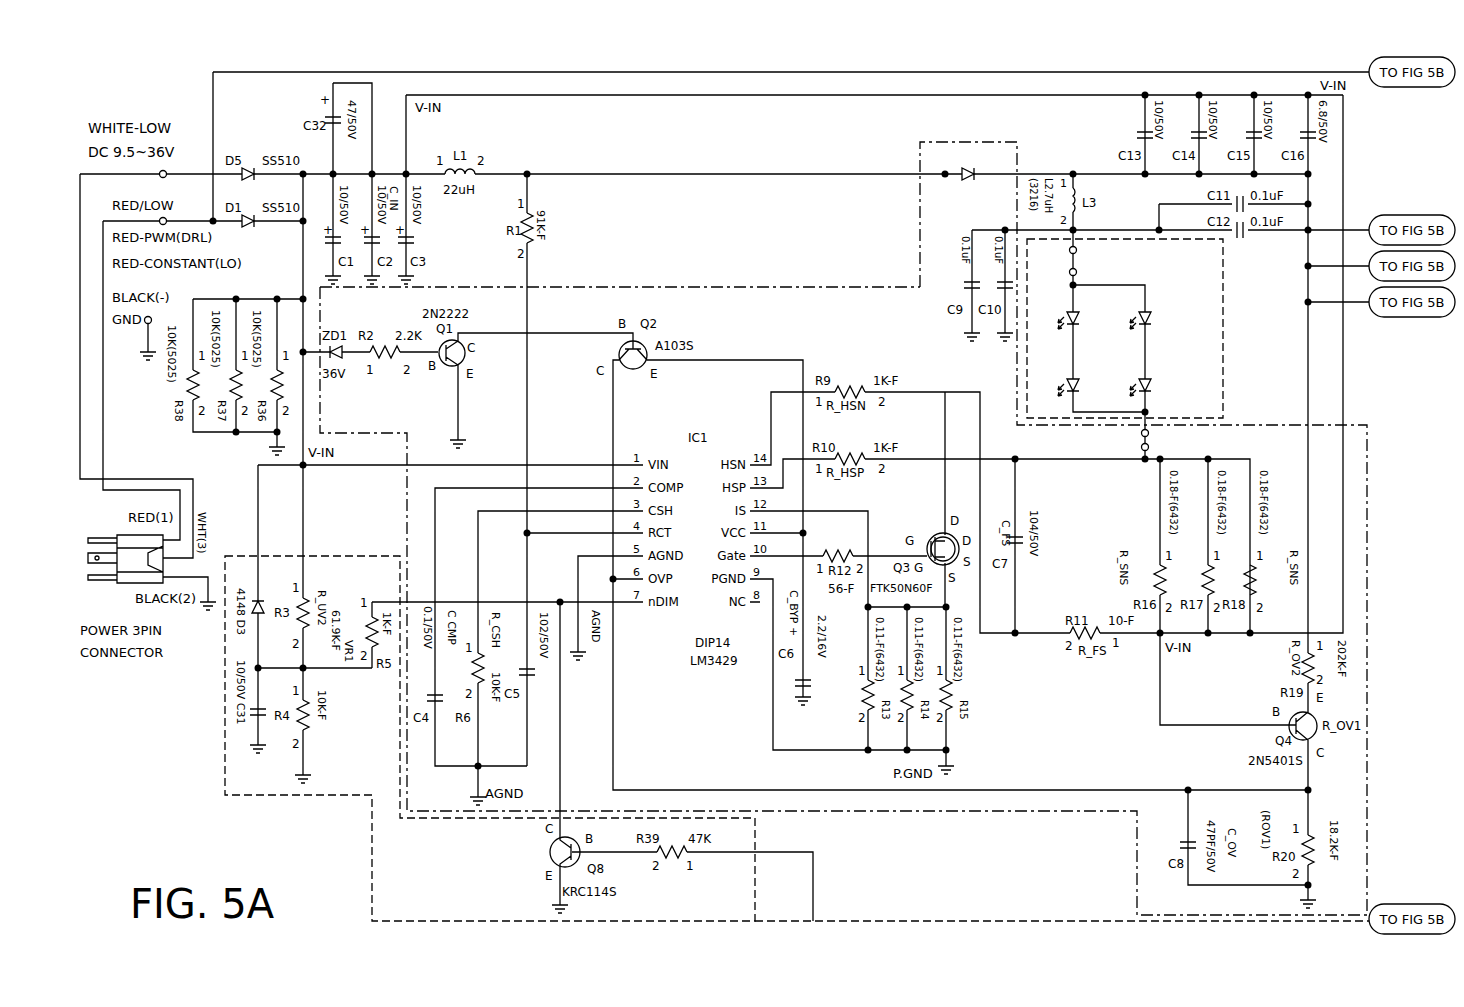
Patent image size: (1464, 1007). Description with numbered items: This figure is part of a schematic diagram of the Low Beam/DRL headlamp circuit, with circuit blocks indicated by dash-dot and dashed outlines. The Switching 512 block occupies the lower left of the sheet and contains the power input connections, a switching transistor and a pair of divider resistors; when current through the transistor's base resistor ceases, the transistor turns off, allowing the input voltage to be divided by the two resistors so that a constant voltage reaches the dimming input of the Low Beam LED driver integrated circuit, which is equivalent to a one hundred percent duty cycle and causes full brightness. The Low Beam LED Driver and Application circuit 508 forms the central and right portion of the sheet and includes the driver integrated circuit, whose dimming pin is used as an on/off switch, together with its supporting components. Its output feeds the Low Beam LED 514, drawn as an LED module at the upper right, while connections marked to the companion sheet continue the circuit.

The Low Beam LED Driver and Application circuit 508 is at (945, 142).
The Switching 512 is at (372, 845).
The Low Beam LED 514 is at (1115, 239).